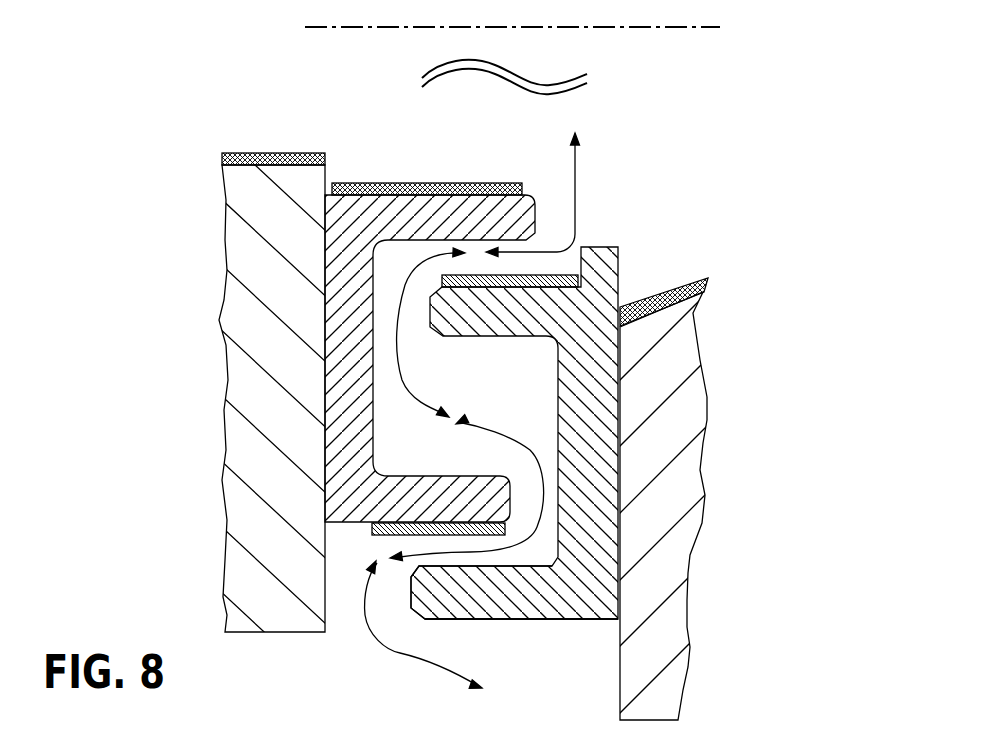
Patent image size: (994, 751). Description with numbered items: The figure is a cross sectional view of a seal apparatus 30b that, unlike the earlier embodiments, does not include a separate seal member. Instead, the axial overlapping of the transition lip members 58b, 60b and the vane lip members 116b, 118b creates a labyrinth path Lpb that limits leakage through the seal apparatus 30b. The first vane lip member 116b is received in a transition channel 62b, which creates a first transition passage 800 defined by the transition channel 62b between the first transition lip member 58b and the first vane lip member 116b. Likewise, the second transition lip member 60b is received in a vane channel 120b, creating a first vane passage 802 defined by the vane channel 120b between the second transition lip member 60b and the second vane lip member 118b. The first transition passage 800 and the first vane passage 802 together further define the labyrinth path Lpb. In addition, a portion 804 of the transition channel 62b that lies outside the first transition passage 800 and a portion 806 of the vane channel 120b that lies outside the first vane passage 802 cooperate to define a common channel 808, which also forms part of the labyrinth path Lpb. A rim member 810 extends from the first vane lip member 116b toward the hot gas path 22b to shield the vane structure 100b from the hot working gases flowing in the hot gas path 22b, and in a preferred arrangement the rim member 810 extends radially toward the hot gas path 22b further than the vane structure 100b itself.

The hot gas path 22b is at (680, 28).
The first transition lip member 58b is at (400, 203).
The second transition lip member 60b is at (440, 498).
The transition channel 62b is at (383, 387).
The first transition passage 800 is at (470, 267).
The first vane passage 802 is at (463, 555).
The portion of the transition channel 804 is at (390, 308).
The portion of the vane channel 806 is at (483, 452).
The common channel 808 is at (478, 385).
The rim member 810 is at (605, 260).
The first vane lip member 116b is at (520, 298).
The second vane lip member 118b is at (495, 605).
The vane channel 120b is at (542, 397).
The vane structure 100b is at (700, 357).
The seal apparatus 30b is at (588, 628).
The labyrinth path Lpb is at (400, 653).